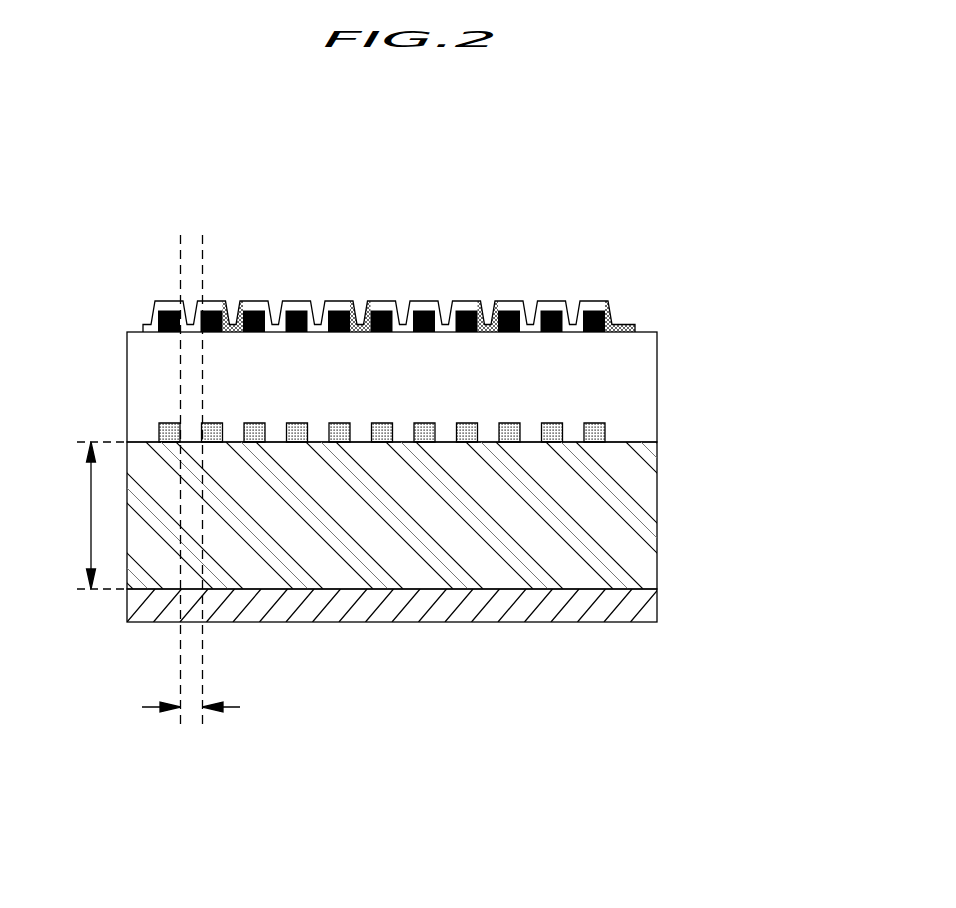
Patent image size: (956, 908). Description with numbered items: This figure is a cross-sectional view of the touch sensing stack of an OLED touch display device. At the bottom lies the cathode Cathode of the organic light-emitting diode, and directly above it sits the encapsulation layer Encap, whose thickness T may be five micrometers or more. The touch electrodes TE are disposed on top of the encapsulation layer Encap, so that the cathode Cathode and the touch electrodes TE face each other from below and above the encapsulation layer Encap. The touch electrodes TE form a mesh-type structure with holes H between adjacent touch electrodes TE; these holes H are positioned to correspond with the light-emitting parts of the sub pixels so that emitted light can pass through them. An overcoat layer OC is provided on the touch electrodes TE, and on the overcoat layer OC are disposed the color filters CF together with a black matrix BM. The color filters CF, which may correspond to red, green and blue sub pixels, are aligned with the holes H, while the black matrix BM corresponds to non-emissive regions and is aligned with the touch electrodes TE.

The black matrix BM is at (601, 311).
The color filters CF is at (607, 308).
The overcoat layer OC is at (657, 361).
The touch electrodes TE is at (158, 433).
The encapsulation layer Encap is at (657, 470).
The cathode Cathode is at (657, 605).
The thickness of the encapsulation layer T is at (95, 515).
The holes H is at (191, 505).